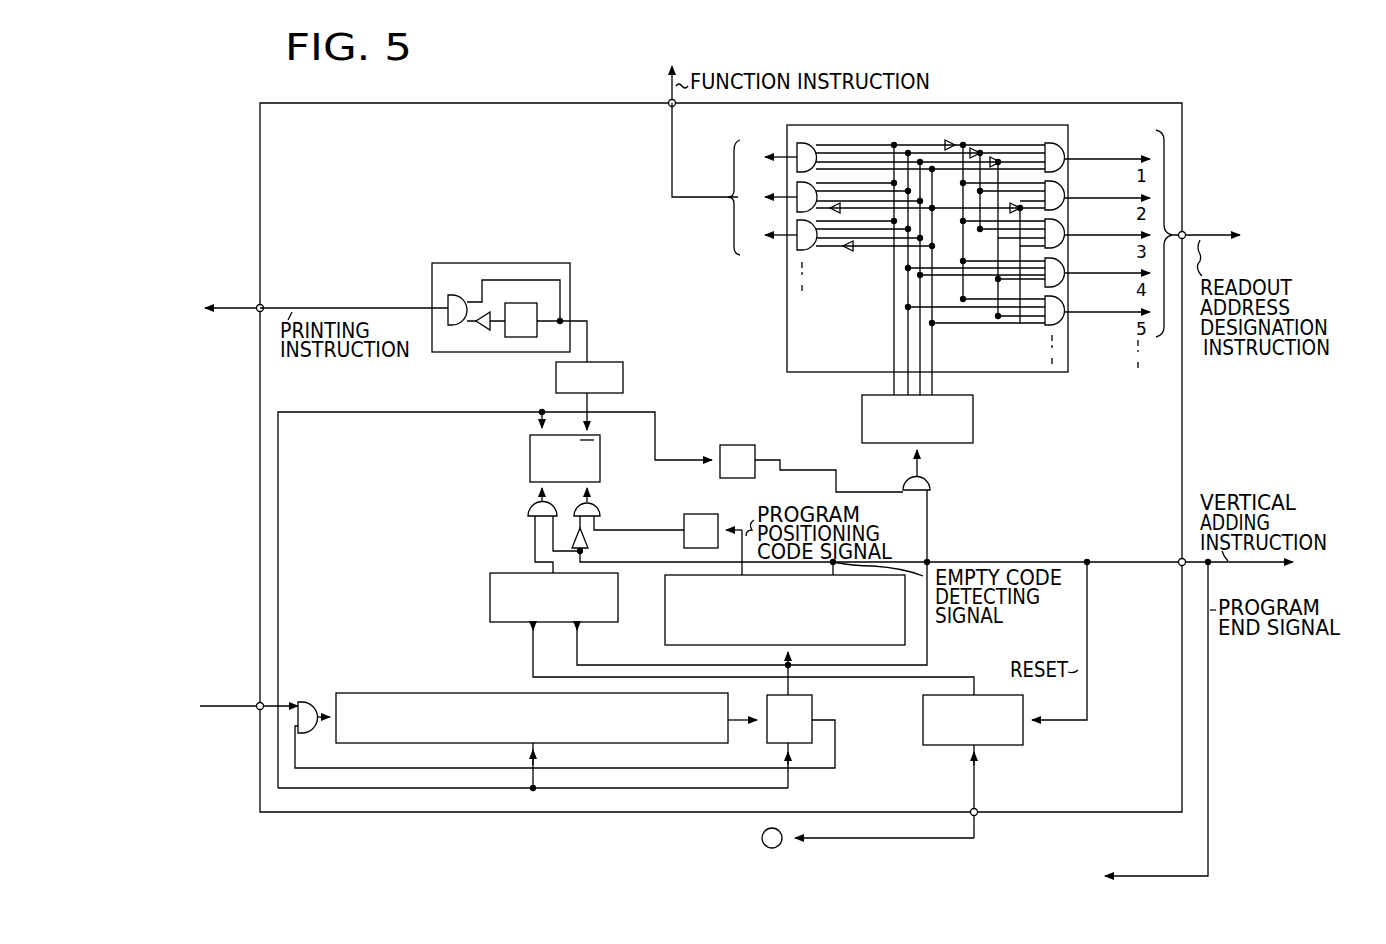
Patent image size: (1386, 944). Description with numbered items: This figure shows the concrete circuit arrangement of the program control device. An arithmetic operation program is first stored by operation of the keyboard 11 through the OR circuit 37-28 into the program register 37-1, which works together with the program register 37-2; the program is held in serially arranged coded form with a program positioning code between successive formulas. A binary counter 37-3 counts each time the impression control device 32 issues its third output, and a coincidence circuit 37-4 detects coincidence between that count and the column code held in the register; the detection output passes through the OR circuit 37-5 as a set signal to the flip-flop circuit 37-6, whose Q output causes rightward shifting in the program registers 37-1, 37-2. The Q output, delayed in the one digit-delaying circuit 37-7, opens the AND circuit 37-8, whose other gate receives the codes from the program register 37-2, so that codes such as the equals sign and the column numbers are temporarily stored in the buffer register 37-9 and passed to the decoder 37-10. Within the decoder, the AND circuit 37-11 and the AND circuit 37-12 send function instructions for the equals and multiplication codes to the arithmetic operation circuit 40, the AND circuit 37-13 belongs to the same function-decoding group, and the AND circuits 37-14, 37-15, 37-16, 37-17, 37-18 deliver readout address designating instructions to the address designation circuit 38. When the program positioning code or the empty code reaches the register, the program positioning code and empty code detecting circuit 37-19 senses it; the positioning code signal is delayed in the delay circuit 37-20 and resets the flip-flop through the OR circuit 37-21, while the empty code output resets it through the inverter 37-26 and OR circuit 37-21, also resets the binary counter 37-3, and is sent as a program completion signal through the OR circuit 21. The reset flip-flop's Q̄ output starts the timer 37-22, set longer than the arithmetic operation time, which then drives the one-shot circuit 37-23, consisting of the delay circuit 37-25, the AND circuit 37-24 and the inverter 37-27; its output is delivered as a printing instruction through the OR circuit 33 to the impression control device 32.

The program register 37-1 is at (456, 693).
The program register 37-2 is at (812, 697).
The binary counter 37-3 is at (996, 745).
The coincidence circuit 37-4 is at (490, 598).
The OR circuit 37-5 is at (528, 509).
The flip-flop circuit 37-6 is at (530, 460).
The one digit-delaying circuit 37-7 is at (740, 445).
The AND circuit 37-8 is at (932, 485).
The buffer register 37-9 is at (974, 412).
The decoder 37-10 is at (787, 368).
The AND circuit 37-11 is at (798, 148).
The AND circuit 37-12 is at (798, 237).
The AND circuit 37-13 is at (812, 250).
The AND circuit 37-14 is at (1064, 148).
The AND circuit 37-15 is at (1064, 187).
The AND circuit 37-16 is at (1064, 224).
The AND circuit 37-17 is at (1064, 264).
The AND circuit 37-18 is at (1064, 302).
The program positioning code and empty code detecting circuit 37-19 is at (665, 640).
The delay circuit 37-20 is at (703, 513).
The OR circuit 37-21 is at (598, 509).
The timer 37-22 is at (604, 364).
The one-shot circuit 37-23 is at (454, 262).
The AND circuit 37-24 is at (438, 298).
The delay circuit 37-25 is at (520, 340).
The inverter 37-26 is at (588, 540).
The inverter 37-27 is at (480, 326).
The OR circuit 37-28 is at (310, 698).
The keyboard 11 is at (183, 711).
The OR circuit 21 is at (1182, 734).
The impression control device 32 is at (947, 851).
The OR circuit 33 is at (161, 295).
The address designation circuit 38 is at (1273, 239).
The arithmetic operation circuit 40 is at (859, 70).